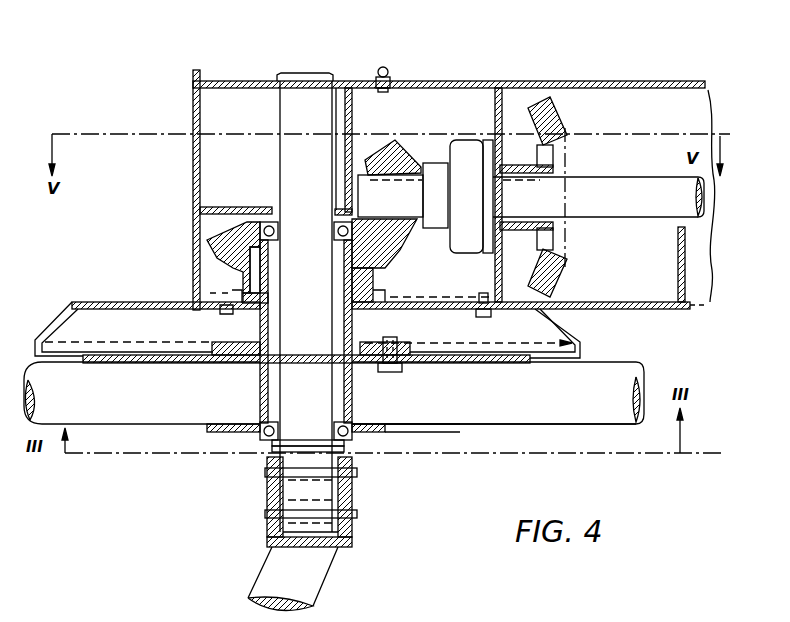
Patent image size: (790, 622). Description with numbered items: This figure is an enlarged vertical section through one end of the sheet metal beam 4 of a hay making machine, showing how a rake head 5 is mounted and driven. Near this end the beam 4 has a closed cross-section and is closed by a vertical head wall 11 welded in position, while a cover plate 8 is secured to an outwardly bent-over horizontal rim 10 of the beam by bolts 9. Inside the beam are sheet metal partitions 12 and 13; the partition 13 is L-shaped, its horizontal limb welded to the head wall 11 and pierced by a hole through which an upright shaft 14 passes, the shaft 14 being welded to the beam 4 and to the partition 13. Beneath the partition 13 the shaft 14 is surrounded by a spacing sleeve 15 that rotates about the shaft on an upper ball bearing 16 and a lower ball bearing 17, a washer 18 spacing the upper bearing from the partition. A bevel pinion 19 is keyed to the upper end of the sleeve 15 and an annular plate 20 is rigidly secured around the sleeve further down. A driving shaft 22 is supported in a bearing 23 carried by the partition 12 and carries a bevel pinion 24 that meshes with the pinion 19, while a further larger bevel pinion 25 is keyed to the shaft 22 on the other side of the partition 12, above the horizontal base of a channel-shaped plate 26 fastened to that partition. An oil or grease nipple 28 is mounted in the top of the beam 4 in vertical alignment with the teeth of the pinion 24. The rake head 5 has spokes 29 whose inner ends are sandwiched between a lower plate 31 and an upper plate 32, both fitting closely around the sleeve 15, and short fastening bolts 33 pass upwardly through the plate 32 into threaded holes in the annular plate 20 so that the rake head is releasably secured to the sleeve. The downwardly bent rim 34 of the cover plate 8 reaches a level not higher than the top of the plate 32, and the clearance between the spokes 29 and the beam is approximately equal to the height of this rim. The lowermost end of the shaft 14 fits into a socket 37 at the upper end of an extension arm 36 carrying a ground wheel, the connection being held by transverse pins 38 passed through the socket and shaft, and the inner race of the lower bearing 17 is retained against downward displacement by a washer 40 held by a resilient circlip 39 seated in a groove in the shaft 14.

The beam 4 is at (585, 82).
The rake head 5 is at (584, 418).
The cover plate 8 is at (447, 301).
The bolt 9 is at (489, 314).
The horizontal rim 10 is at (703, 318).
The head wall 11 is at (193, 87).
The partition 12 is at (505, 92).
The partition 13 is at (353, 109).
The upright shaft 14 is at (293, 82).
The spacing sleeve 15 is at (360, 329).
The upper ball bearing 16 is at (282, 230).
The lower ball bearing 17 is at (333, 419).
The washer 18 is at (272, 207).
The bevel pinion 19 is at (380, 276).
The annular plate 20 is at (213, 342).
The driving shaft 22 is at (625, 161).
The bearing 23 is at (465, 148).
The bevel pinion 24 is at (393, 150).
The bevel pinion 25 is at (550, 117).
The plate 26 is at (678, 262).
The oil or grease nipple 28 is at (384, 66).
The spoke 29 is at (133, 415).
The lower plate 31 is at (207, 430).
The upper plate 32 is at (173, 365).
The fastening bolt 33 is at (400, 369).
The rim 34 is at (580, 333).
The extension arm 36 is at (318, 568).
The socket 37 is at (272, 540).
The transverse pin 38 is at (267, 513).
The circlip 39 is at (347, 448).
The washer 40 is at (273, 441).